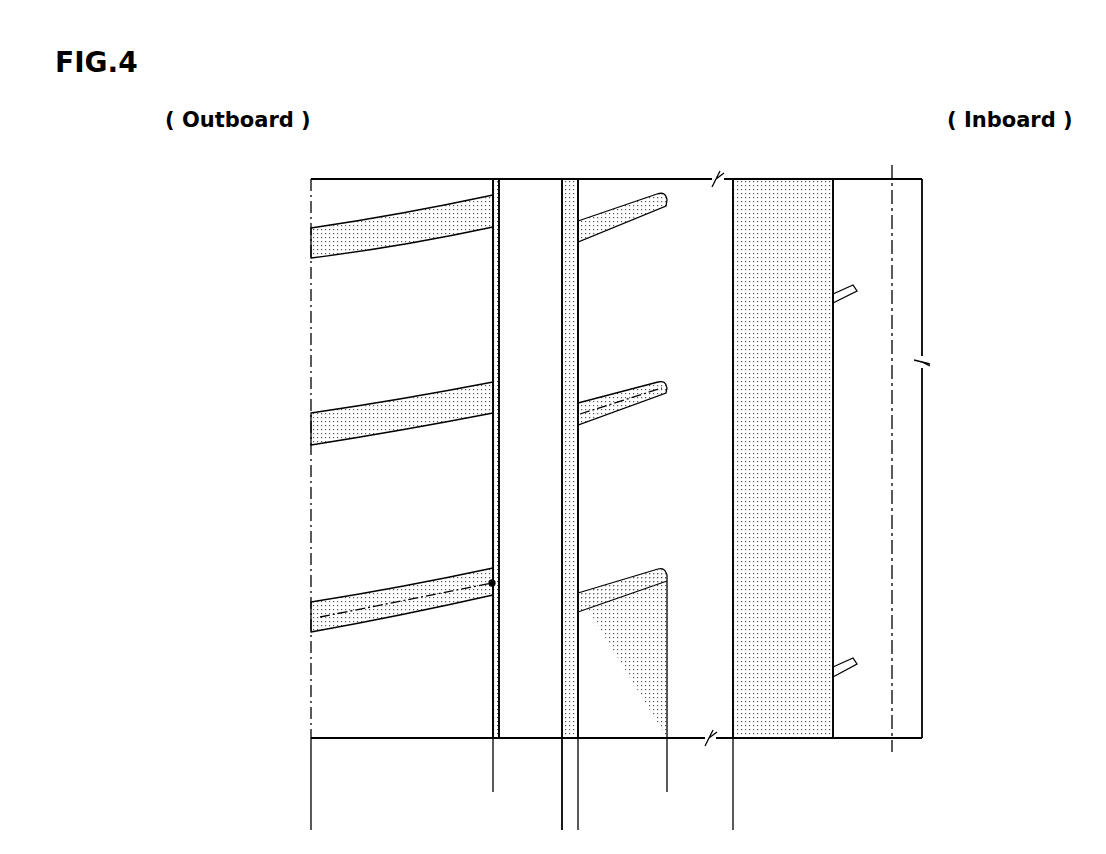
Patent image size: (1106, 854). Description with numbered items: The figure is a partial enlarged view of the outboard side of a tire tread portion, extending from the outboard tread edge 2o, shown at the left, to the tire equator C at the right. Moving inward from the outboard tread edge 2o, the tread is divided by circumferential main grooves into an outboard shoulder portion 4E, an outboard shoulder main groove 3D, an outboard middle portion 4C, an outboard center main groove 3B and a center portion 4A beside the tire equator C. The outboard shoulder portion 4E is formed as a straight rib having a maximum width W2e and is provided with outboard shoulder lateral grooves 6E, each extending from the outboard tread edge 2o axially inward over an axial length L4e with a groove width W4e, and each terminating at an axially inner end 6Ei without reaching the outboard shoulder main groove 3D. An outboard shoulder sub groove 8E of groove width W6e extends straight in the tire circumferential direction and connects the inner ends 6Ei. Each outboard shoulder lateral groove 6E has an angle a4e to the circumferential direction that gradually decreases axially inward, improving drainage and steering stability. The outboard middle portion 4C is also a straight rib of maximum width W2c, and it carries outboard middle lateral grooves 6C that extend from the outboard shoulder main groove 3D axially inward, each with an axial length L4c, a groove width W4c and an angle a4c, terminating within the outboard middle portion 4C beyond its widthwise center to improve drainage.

The outboard tread edge 2o is at (310, 688).
The outboard shoulder portion 4E is at (366, 200).
The outboard shoulder sub groove 8E is at (490, 325).
The outboard shoulder main groove 3D is at (567, 212).
The outboard center main groove 3B is at (780, 215).
The outboard middle portion 4C is at (697, 215).
The center portion 4A is at (860, 215).
The tire equator C is at (891, 445).
The outboard shoulder lateral groove 6E is at (343, 243).
The axially inner end 6Ei is at (492, 583).
The outboard middle lateral groove 6C is at (638, 226).
The groove width W6e is at (510, 288).
The groove width W4e is at (392, 375).
The groove width W4c is at (620, 255).
The angle a4e is at (487, 548).
The angle a4c is at (620, 402).
The axial length L4e is at (482, 789).
The axial length L4c is at (656, 789).
The maximum width W2e is at (551, 826).
The maximum width W2c is at (722, 826).